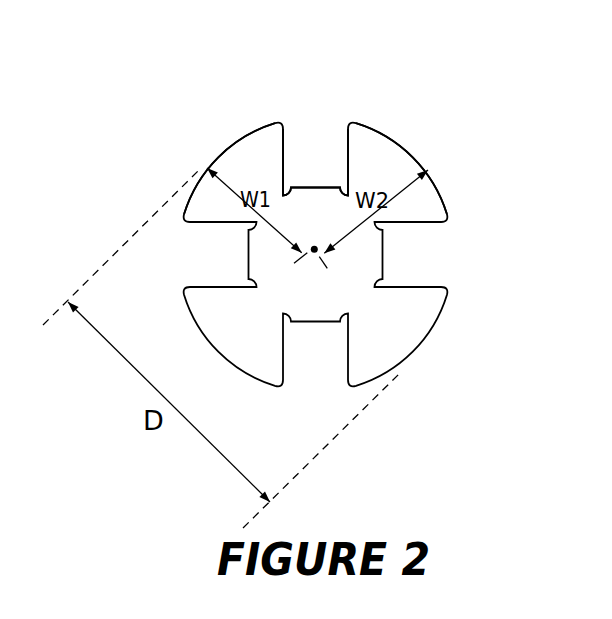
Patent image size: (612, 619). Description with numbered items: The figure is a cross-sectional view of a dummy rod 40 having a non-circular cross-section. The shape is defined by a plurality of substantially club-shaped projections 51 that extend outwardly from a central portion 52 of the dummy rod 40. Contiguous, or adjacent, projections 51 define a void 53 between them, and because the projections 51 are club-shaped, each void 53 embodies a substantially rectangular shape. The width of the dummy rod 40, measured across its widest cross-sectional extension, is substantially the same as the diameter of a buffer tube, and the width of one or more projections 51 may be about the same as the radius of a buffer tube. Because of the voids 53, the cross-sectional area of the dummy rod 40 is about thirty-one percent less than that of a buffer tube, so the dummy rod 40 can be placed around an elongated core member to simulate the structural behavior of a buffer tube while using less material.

The dummy rod 40 is at (168, 110).
The projections 51 is at (362, 135).
The central portion 52 is at (314, 246).
The void 53 is at (312, 158).